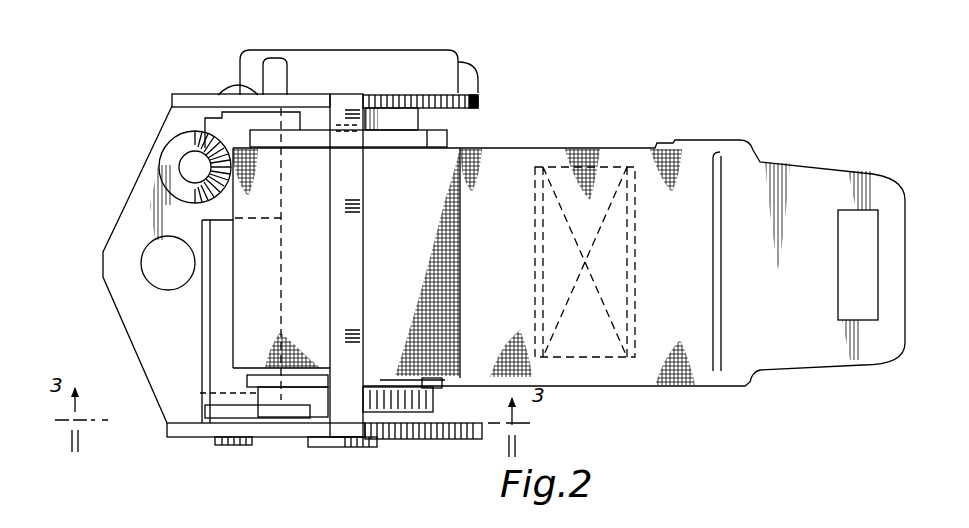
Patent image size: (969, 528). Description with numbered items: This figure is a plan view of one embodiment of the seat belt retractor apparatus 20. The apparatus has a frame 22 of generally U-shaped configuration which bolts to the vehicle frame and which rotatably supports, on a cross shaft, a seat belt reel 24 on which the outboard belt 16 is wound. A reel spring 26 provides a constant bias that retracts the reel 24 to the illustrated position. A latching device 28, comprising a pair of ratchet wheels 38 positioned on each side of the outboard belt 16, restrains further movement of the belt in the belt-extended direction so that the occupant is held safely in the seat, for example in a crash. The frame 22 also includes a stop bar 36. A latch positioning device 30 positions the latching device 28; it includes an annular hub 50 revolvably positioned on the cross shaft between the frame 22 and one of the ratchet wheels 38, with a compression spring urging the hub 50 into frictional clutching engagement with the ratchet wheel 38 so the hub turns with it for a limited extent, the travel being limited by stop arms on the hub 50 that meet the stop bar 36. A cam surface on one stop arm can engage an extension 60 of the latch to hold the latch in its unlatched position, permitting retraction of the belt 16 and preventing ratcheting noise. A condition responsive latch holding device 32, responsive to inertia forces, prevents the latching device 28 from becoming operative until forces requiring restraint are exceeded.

The outboard belt 16 is at (596, 148).
The seat belt retractor apparatus 20 is at (437, 52).
The frame 22 is at (146, 158).
The seat belt reel 24 is at (457, 148).
The reel spring 26 is at (484, 82).
The latching device 28 is at (197, 364).
The latch positioning device 30 is at (283, 420).
The condition responsive latch holding device 32 is at (162, 180).
The stop bar 36 is at (333, 138).
The ratchet wheels 38 is at (456, 128).
The annular hub 50 is at (432, 408).
The extension 60 is at (200, 412).